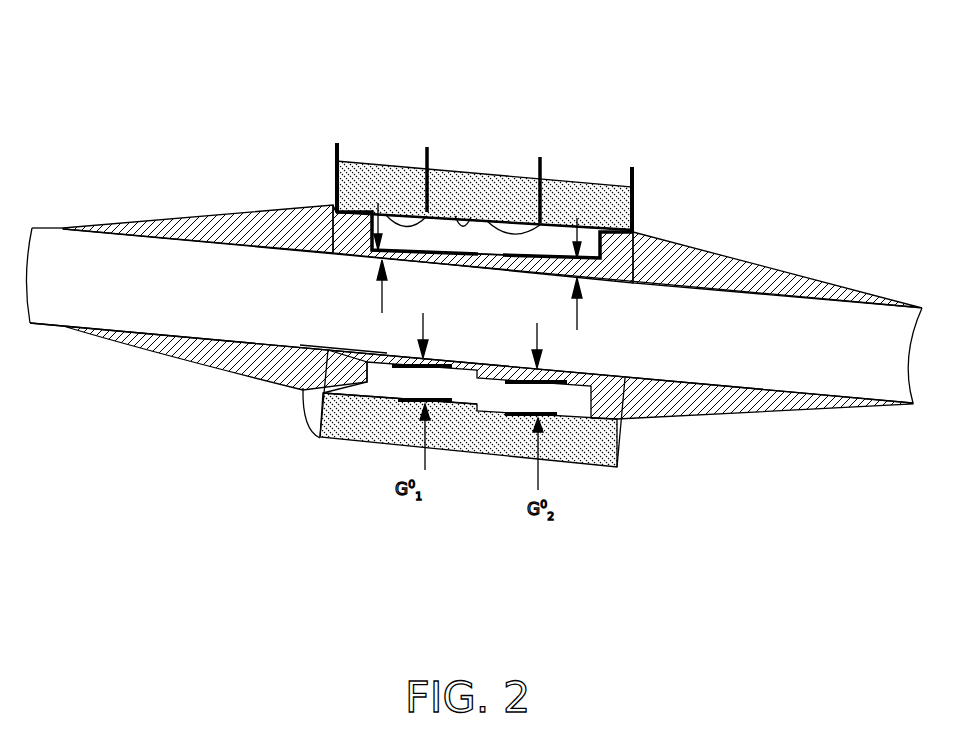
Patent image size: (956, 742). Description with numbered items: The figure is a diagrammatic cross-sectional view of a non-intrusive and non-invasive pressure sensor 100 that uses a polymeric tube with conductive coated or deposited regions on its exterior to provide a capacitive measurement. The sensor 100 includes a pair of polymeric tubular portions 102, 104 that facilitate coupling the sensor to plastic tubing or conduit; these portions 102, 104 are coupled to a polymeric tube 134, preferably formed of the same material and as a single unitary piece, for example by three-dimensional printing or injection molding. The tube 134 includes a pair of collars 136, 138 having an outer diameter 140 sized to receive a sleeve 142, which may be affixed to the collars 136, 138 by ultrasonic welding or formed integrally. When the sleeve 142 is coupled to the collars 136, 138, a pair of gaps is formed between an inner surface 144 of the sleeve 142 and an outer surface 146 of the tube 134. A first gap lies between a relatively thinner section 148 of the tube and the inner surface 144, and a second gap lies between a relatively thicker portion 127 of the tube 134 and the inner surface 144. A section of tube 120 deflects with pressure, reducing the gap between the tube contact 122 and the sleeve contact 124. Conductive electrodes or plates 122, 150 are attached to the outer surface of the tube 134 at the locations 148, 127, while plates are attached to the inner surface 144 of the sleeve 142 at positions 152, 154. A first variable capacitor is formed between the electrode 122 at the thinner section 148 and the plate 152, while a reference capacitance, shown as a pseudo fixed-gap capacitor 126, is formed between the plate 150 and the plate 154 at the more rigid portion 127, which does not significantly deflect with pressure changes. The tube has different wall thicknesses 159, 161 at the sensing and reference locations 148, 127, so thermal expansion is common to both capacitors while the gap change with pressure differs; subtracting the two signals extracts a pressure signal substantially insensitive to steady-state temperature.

The sensor 100 is at (722, 158).
The polymeric tubular portion 102 is at (127, 348).
The polymeric tubular portion 104 is at (833, 415).
The section of tube 120 is at (387, 352).
The tube contact 122 is at (360, 386).
The sleeve contact 124 is at (387, 395).
The pseudo fixed-gap capacitor 126 is at (590, 412).
The relatively thicker portion 127 is at (562, 376).
The polymeric tube 134 is at (633, 261).
The collar 136 is at (328, 350).
The collar 138 is at (623, 402).
The outer diameter 140 is at (320, 438).
The sleeve 142 is at (578, 168).
The inner surface 144 is at (458, 222).
The outer surface 146 is at (458, 370).
The relatively thinner section 148 is at (450, 356).
The conductive electrode or plate 150 is at (550, 390).
The plate 152 is at (378, 208).
The plate 154 is at (487, 222).
The thickness 159 is at (382, 298).
The thickness 161 is at (577, 318).